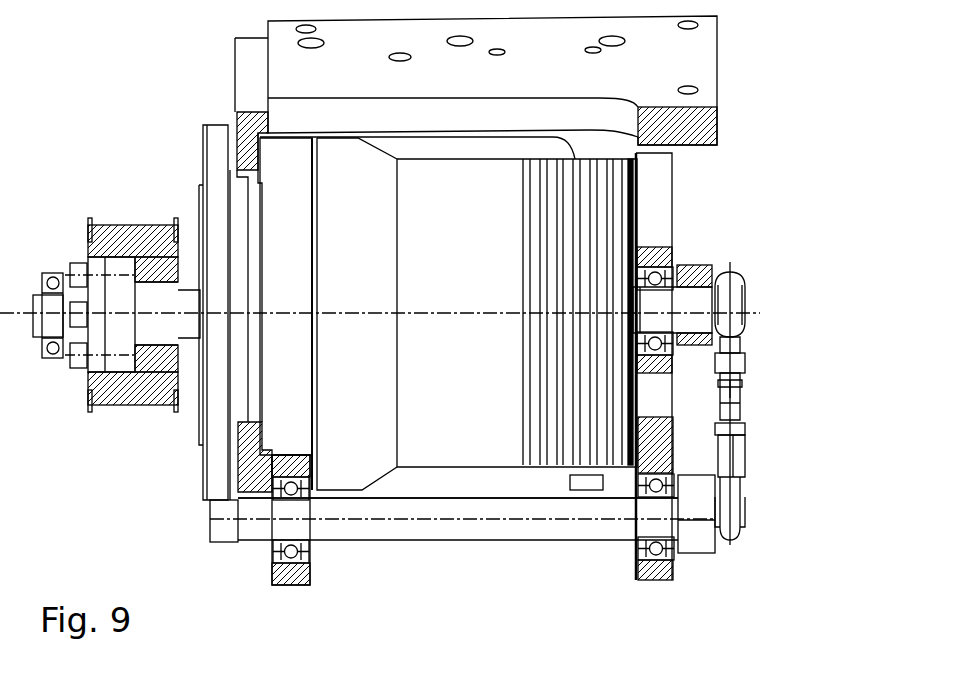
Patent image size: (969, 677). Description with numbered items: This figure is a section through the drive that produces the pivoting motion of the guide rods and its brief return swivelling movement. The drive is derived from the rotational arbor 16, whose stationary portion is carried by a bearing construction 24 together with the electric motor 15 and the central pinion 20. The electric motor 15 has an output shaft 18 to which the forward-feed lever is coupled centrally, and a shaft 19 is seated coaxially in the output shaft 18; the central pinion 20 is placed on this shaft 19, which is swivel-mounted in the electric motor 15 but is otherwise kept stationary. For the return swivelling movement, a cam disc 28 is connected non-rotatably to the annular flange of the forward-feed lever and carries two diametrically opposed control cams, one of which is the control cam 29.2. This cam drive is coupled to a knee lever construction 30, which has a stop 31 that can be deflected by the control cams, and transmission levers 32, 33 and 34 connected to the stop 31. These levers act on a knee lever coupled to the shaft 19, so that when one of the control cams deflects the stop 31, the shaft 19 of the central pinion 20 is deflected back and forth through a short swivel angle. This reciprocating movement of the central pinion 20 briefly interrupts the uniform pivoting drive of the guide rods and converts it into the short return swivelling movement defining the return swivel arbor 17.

The electric motor 15 is at (508, 226).
The rotational arbor 16 is at (678, 307).
The return swivel arbor 17 is at (680, 287).
The output shaft 18 is at (270, 397).
The shaft 19 is at (703, 318).
The central pinion 20 is at (118, 228).
The bearing construction 24 is at (708, 60).
The cam disc 28 is at (215, 180).
The control cam 29.2 is at (213, 132).
The knee lever construction 30 is at (498, 538).
The stop 31 is at (217, 515).
The transmission lever 32 is at (423, 535).
The transmission lever 33 is at (707, 550).
The transmission lever 34 is at (742, 450).